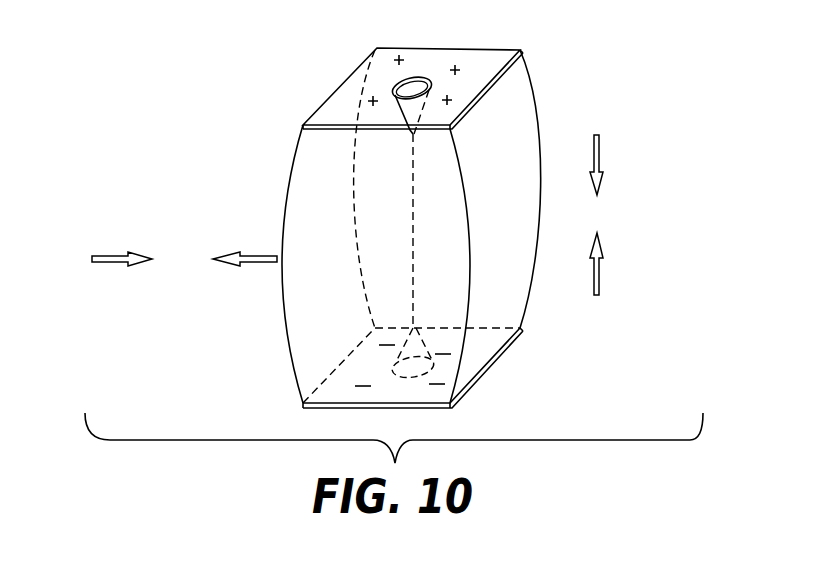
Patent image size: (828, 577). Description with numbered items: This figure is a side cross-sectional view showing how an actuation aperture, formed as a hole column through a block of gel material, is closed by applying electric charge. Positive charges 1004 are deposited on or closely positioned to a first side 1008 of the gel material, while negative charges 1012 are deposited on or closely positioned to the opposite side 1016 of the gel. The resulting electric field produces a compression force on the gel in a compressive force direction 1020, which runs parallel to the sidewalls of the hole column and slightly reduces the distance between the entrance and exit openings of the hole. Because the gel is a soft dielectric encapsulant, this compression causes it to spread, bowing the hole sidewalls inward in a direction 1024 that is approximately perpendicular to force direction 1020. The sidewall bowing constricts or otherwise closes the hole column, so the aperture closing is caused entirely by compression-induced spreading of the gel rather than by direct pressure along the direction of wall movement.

The positive charges 1004 is at (394, 63).
The first side of gel material 1008 is at (504, 71).
The negative charges 1012 is at (438, 383).
The opposite side of gel material 1016 is at (508, 344).
The compressive force direction 1020 is at (603, 215).
The direction of sidewall bowing 1024 is at (184, 260).